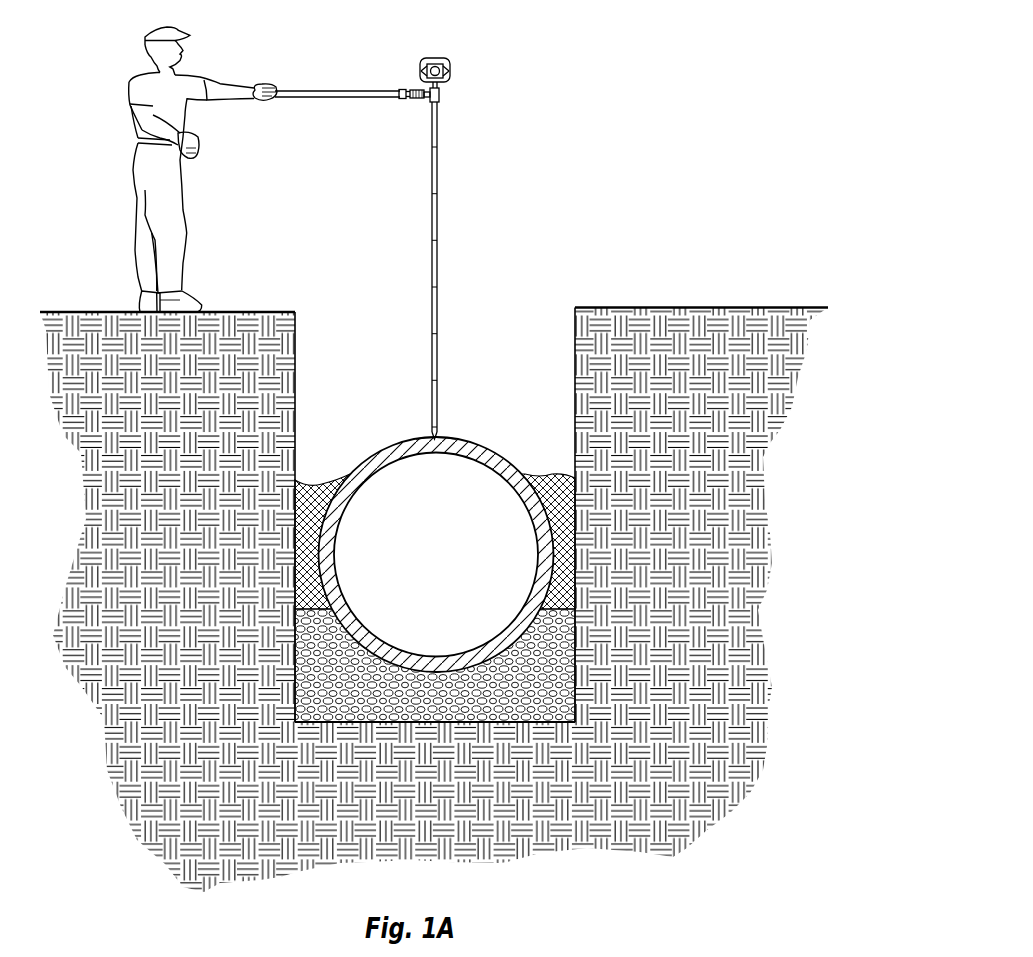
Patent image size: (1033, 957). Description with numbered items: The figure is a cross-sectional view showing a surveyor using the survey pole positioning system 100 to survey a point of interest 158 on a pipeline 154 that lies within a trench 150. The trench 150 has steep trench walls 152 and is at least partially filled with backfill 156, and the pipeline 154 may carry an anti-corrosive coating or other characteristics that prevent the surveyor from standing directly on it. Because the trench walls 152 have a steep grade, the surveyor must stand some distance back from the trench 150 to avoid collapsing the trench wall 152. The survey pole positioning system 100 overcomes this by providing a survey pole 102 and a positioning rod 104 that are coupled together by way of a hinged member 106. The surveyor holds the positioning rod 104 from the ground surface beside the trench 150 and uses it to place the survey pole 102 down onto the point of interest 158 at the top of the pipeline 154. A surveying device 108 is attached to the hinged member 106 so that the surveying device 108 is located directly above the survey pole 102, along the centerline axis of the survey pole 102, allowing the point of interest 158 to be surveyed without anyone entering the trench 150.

The survey pole positioning system 100 is at (417, 225).
The survey pole 102 is at (438, 173).
The positioning rod 104 is at (318, 99).
The hinged member 106 is at (440, 95).
The surveying device 108 is at (433, 60).
The trench 150 is at (435, 582).
The trench walls 152 is at (600, 382).
The pipeline 154 is at (400, 448).
The backfill 156 is at (320, 482).
The point of interest 158 is at (436, 437).